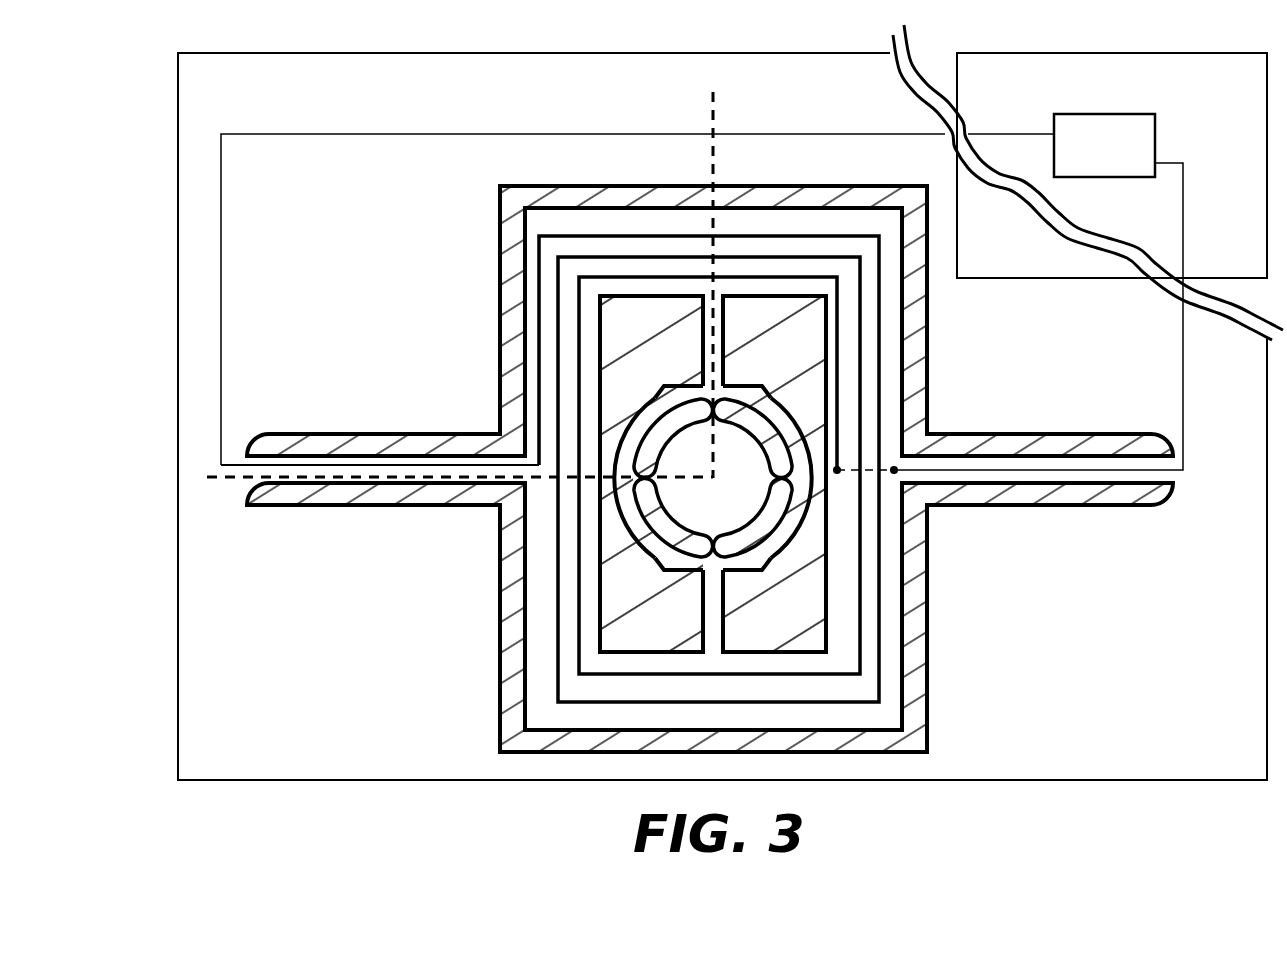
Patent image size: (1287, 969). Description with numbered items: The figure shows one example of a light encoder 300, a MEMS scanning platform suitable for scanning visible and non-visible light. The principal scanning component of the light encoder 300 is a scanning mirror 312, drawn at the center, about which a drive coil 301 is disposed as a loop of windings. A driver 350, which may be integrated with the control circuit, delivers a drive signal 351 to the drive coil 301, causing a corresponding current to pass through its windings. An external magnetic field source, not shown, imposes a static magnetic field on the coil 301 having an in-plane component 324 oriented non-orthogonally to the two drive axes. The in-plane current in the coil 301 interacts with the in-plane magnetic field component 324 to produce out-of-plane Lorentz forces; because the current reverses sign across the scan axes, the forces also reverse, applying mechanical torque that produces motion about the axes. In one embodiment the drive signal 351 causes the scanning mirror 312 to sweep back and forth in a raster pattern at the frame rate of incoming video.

The light encoder 300 is at (462, 52).
The drive coil 301 is at (558, 340).
The scanning mirror 312 is at (737, 510).
The in-plane magnetic field component 324 is at (492, 757).
The driver 350 is at (1098, 148).
The drive signal 351 is at (776, 119).